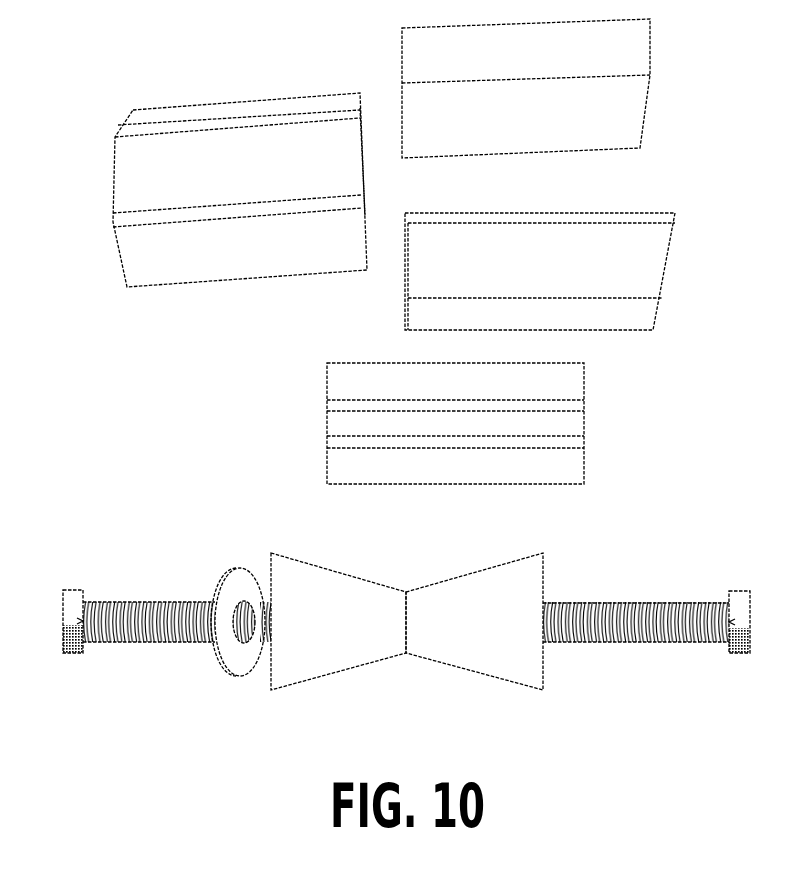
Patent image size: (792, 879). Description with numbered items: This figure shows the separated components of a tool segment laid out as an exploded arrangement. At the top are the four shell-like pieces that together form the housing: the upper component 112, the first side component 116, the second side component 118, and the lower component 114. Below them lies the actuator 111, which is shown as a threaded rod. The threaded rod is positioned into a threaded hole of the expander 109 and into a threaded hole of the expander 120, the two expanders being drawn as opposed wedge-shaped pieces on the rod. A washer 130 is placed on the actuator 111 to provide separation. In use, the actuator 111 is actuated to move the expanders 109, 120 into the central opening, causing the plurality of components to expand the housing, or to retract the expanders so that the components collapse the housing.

The expander 109 is at (322, 543).
The actuator 111 is at (105, 602).
The upper component 112 is at (225, 110).
The lower component 114 is at (342, 430).
The first side component 116 is at (507, 138).
The second side component 118 is at (580, 313).
The expander 120 is at (469, 548).
The washer 130 is at (240, 675).